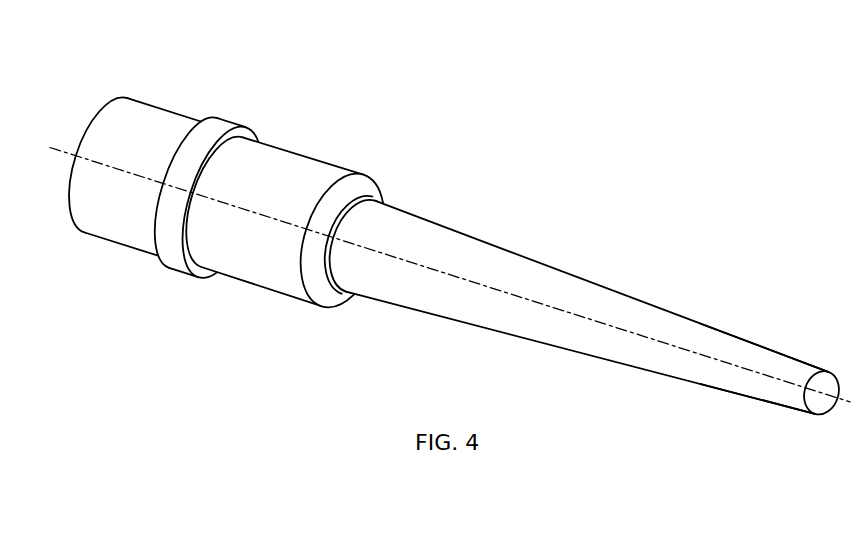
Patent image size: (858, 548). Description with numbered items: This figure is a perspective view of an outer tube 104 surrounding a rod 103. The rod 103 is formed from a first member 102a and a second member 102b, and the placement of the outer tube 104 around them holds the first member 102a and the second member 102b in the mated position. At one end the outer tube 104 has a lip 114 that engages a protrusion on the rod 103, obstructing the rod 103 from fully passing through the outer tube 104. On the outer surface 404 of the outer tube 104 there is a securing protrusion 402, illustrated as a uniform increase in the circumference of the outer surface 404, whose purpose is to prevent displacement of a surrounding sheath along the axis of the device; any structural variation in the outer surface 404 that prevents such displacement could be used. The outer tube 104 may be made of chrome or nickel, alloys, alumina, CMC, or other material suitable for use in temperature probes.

The outer surface 404 is at (152, 100).
The securing protrusion 402 is at (276, 127).
The outer tube 104 is at (262, 290).
The lip 114 is at (370, 198).
The first member 102a is at (413, 232).
The second member 102b is at (390, 287).
The rod 103 is at (708, 327).